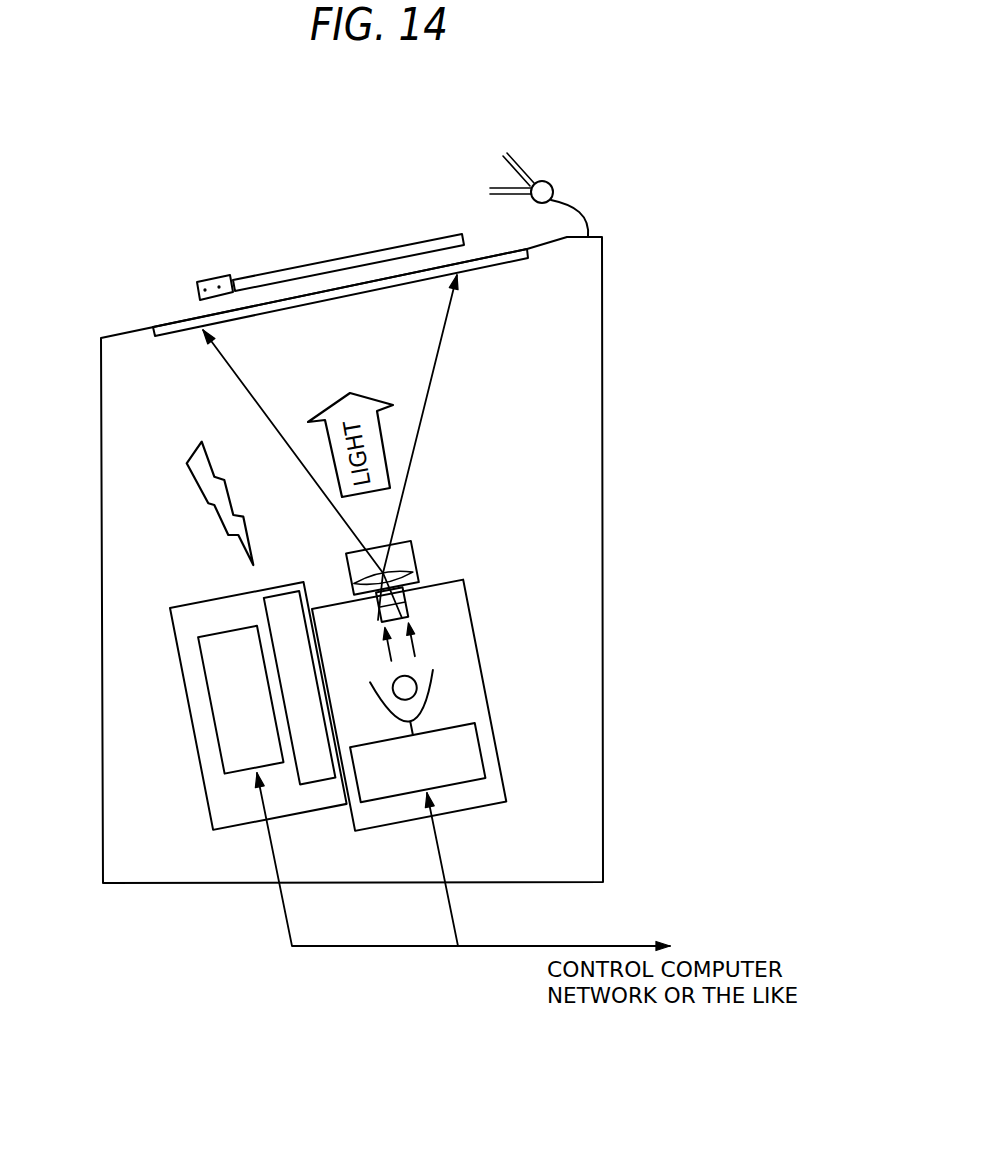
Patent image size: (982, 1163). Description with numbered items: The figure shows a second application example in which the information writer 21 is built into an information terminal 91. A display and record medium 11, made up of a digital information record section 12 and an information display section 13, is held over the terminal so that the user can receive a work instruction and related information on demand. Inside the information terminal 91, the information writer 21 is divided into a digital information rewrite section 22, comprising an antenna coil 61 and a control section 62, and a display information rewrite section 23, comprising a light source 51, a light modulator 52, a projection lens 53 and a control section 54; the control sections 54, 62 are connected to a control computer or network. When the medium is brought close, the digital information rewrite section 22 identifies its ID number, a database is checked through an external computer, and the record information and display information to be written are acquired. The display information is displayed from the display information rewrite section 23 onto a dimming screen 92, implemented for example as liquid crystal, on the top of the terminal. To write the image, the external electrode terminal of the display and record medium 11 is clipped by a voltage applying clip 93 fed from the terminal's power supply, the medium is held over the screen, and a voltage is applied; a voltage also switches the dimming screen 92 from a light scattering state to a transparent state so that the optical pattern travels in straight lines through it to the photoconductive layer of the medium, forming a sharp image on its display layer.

The display and record medium 11 is at (320, 220).
The digital information record section 12 is at (213, 280).
The information display section 13 is at (358, 253).
The information writer 21 is at (506, 816).
The digital information rewrite section 22 is at (233, 690).
The display information rewrite section 23 is at (473, 633).
The light source 51 is at (417, 686).
The light modulator 52 is at (420, 590).
The projection lens 53 is at (418, 568).
The control section 54 is at (483, 748).
The antenna coil 61 is at (263, 608).
The control section 62 is at (210, 700).
The information terminal 91 is at (603, 332).
The dimming screen 92 is at (160, 328).
The voltage applying clip 93 is at (551, 178).